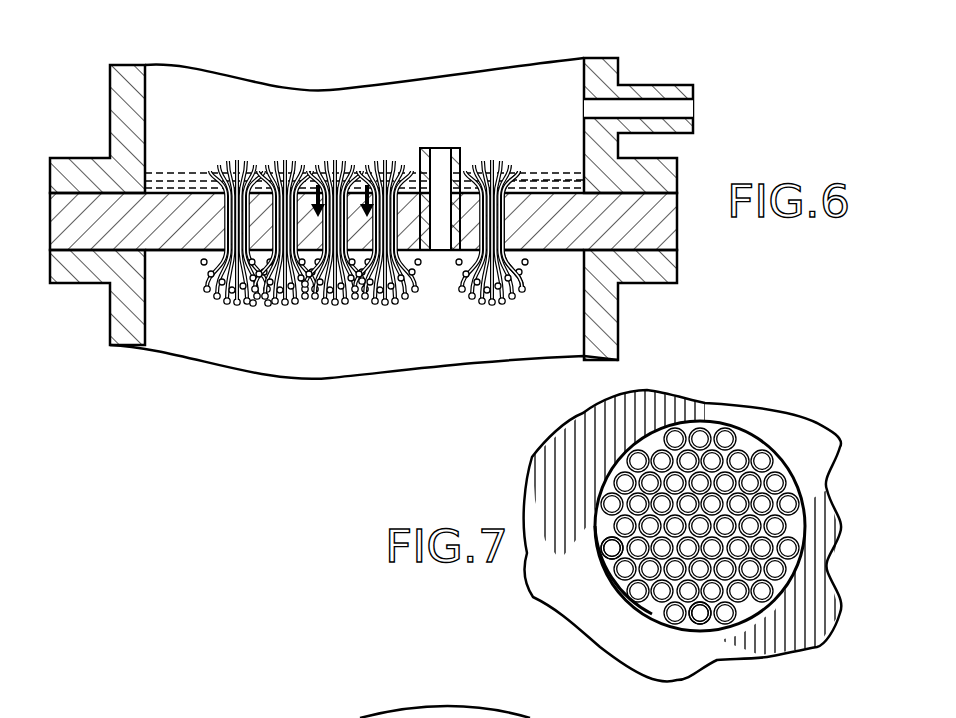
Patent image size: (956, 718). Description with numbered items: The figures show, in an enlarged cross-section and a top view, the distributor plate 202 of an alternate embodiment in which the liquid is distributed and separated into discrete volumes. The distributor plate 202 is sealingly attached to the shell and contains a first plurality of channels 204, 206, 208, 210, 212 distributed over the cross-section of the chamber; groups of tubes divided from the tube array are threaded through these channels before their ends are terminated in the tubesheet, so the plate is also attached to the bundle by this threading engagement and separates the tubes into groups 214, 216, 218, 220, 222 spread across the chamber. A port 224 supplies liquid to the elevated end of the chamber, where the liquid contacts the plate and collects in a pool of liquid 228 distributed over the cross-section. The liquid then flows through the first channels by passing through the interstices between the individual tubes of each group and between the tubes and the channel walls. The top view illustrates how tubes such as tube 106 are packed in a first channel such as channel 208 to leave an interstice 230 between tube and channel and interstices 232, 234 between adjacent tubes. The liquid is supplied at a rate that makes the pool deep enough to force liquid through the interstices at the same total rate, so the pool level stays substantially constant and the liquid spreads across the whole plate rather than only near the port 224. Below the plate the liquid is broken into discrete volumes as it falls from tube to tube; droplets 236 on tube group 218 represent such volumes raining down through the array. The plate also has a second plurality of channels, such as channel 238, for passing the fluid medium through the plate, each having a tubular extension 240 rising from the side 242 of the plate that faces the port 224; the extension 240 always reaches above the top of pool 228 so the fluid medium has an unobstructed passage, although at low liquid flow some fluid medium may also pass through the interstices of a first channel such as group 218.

In FIG. 6, the tube 106 is at (246, 157).
In FIG. 7, the tube 106 is at (613, 585).
In FIG. 6, the distributor plate 202 is at (50, 220).
In FIG. 6, the first channel 204 is at (214, 246).
In FIG. 6, the first channel 206 is at (306, 287).
In FIG. 6, the first channel 208 is at (363, 284).
In FIG. 7, the first channel 208 is at (713, 422).
In FIG. 6, the first channel 210 is at (428, 253).
In FIG. 6, the first channel 212 is at (510, 234).
In FIG. 6, the group of tubes 214 is at (232, 158).
In FIG. 6, the group of tubes 216 is at (290, 158).
In FIG. 6, the group of tubes 218 is at (342, 155).
In FIG. 6, the group of tubes 220 is at (386, 155).
In FIG. 6, the group of tubes 222 is at (500, 155).
In FIG. 6, the port 224 is at (673, 112).
In FIG. 6, the pool of liquid 228 is at (175, 177).
In FIG. 7, the interstice 230 is at (652, 614).
In FIG. 7, the interstice 232 is at (703, 624).
In FIG. 7, the interstice 234 is at (753, 452).
In FIG. 6, the droplets 236 is at (268, 306).
In FIG. 6, the second channel 238 is at (436, 150).
In FIG. 6, the tubular extension 240 is at (478, 150).
In FIG. 6, the side of the plate 242 is at (538, 192).